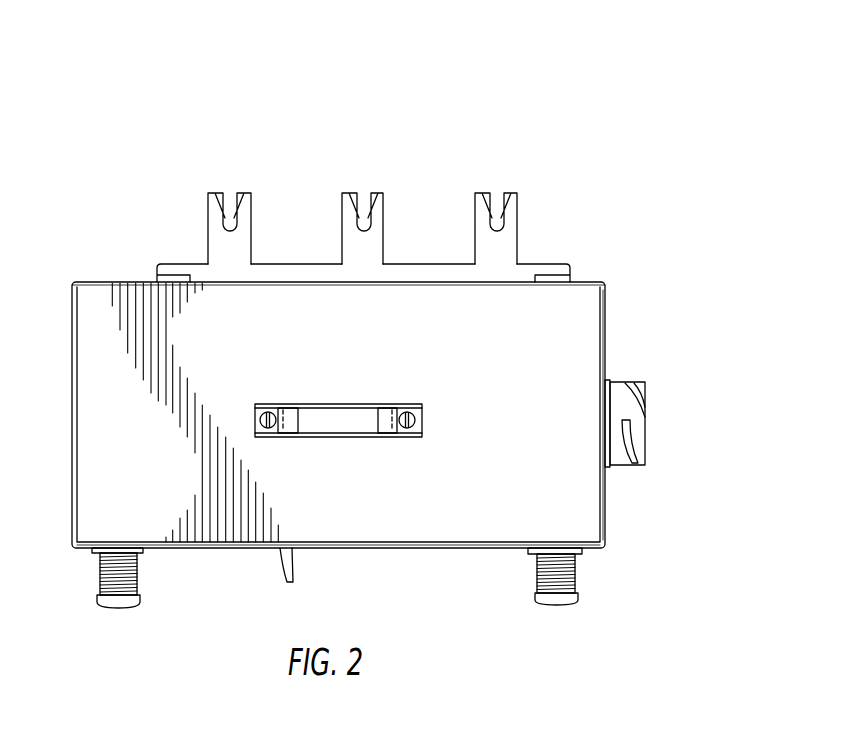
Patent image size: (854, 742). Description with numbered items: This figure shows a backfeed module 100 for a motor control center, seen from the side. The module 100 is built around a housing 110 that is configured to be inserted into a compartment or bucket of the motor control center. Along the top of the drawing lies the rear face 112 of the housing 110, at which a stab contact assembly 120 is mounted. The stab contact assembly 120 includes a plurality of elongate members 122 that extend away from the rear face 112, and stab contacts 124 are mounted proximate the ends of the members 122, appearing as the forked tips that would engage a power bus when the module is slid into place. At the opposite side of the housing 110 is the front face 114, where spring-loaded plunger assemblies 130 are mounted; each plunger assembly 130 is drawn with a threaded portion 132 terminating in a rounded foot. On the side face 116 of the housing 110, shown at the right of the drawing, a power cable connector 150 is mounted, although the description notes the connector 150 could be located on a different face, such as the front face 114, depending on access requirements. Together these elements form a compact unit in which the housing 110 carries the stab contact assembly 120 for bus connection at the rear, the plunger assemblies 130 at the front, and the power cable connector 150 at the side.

The backfeed module 100 is at (404, 351).
The housing 110 is at (603, 313).
The rear face 112 is at (117, 272).
The front face 114 is at (478, 548).
The side face 116 is at (613, 518).
The stab contact assembly 120 is at (527, 262).
The elongate members 122 is at (380, 222).
The stab contacts 124 is at (230, 193).
The spring-loaded plunger assemblies 130 is at (562, 606).
The threaded shaft 132 is at (540, 577).
The power cable connector 150 is at (645, 422).